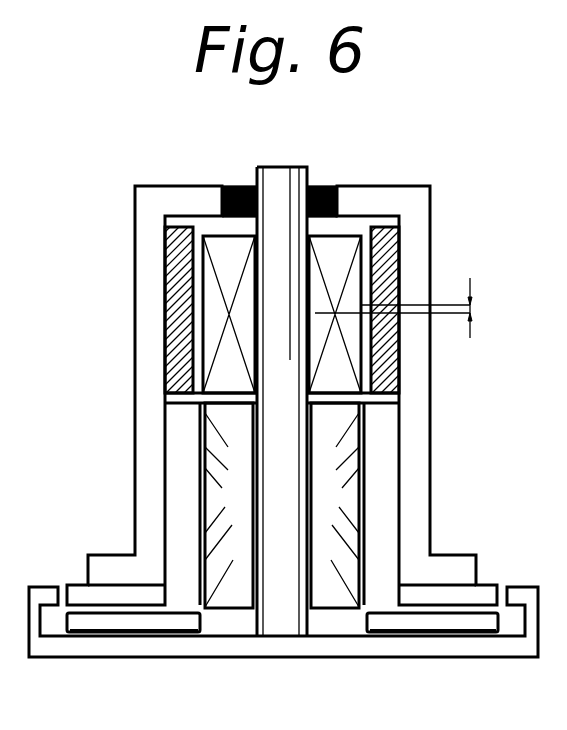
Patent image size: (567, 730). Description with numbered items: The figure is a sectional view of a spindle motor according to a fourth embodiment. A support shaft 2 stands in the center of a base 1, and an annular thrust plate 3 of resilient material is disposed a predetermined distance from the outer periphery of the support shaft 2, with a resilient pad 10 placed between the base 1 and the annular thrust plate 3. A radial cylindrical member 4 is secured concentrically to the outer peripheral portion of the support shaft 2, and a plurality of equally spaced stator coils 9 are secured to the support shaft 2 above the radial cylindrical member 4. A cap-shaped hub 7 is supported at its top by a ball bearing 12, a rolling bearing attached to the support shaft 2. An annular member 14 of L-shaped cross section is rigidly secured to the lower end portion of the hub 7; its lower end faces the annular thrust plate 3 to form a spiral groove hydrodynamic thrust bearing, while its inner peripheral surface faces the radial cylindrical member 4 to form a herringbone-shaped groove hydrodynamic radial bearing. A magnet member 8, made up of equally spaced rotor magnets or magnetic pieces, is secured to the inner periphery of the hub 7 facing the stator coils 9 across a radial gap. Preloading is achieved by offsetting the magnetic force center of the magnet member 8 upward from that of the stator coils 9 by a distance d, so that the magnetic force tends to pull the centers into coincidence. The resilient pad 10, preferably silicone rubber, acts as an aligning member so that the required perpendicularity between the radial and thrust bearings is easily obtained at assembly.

The base 1 is at (155, 657).
The support shaft 2 is at (281, 175).
The annular thrust plate 3 is at (478, 623).
The radial cylindrical member 4 is at (337, 598).
The hub 7 is at (135, 408).
The magnet member 8 is at (400, 257).
The stator coils 9 is at (210, 295).
The resilient pad 10 is at (453, 633).
The ball bearing 12 is at (322, 182).
The annular member 14 is at (388, 512).
The distance d is at (474, 307).